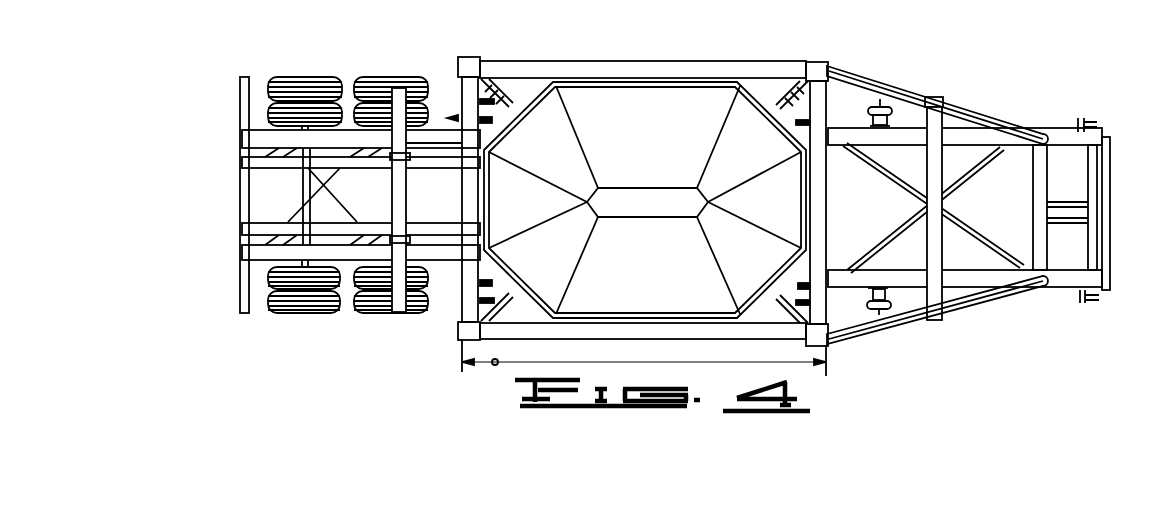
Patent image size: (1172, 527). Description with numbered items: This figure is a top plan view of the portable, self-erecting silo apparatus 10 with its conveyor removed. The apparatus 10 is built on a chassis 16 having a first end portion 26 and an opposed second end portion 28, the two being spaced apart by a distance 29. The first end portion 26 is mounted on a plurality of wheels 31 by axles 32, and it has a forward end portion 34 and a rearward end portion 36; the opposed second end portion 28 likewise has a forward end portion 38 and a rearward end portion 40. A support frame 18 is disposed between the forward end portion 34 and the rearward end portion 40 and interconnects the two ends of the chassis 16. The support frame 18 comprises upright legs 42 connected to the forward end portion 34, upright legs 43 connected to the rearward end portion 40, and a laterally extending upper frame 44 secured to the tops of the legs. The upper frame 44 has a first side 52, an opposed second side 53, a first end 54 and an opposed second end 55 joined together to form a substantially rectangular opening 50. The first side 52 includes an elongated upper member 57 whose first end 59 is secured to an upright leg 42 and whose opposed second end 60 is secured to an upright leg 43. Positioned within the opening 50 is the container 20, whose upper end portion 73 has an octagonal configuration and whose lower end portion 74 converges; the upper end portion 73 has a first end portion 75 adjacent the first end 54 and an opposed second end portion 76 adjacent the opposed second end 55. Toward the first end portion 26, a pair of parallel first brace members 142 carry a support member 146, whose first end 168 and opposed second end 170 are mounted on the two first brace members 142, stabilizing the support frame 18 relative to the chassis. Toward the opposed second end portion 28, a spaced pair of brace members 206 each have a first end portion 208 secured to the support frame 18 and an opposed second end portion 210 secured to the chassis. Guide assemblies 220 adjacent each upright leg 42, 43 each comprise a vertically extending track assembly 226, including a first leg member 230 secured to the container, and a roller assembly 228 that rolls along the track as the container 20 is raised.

The portable, self-erecting silo apparatus 10 is at (1080, 88).
The chassis 16 is at (225, 250).
The support frame 18 is at (540, 58).
The container 20 is at (655, 127).
The first end portion 26 is at (343, 255).
The opposed second end portion 28 is at (973, 280).
The distance 29 is at (492, 364).
The wheels 31 is at (341, 223).
The axles 32 is at (302, 195).
The forward end portion 34 is at (440, 260).
The rearward end portion 36 is at (253, 270).
The forward end portion 38 is at (1083, 282).
The rearward end portion 40 is at (842, 268).
The upright legs 42 is at (473, 63).
The upright legs 43 is at (827, 68).
The laterally extending upper frame 44 is at (685, 58).
The opening 50 is at (752, 83).
The first side 52 is at (606, 337).
The opposed second side 53 is at (620, 60).
The first end 54 is at (454, 195).
The opposed second end 55 is at (830, 207).
The upper member 57 is at (705, 335).
The first end 59 is at (530, 332).
The opposed second end 60 is at (767, 338).
The upper end portion 73 is at (571, 96).
The lower end portion 74 is at (610, 172).
The first end portion 75 is at (487, 202).
The opposed second end portion 76 is at (803, 205).
The first brace member 142 is at (483, 168).
The support member 146 is at (403, 203).
The first end 168 is at (402, 233).
The opposed second end 170 is at (403, 163).
The brace member 206 is at (968, 113).
The first end portion 208 is at (1032, 290).
The opposed second end portion 210 is at (843, 335).
The guide assemblies 220 is at (480, 73).
The track assembly 226 is at (506, 290).
The roller assembly 228 is at (557, 313).
The first leg member 230 is at (503, 98).